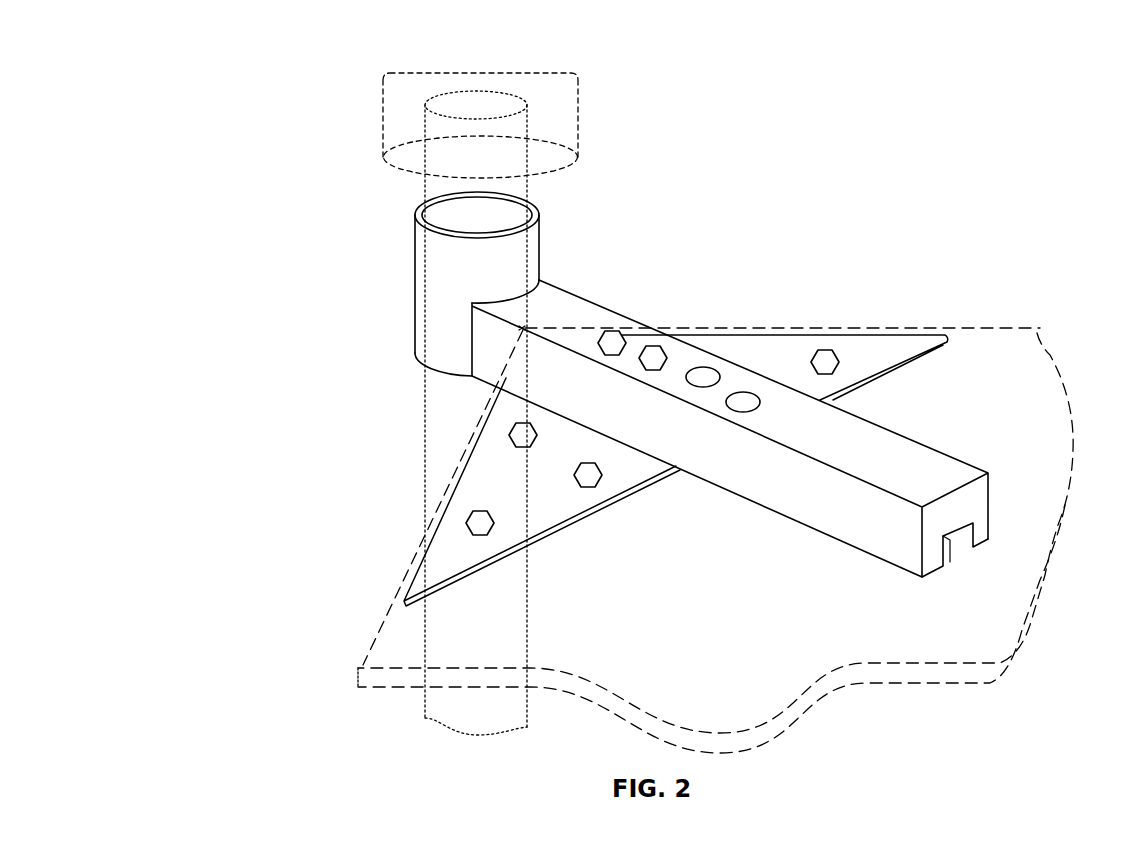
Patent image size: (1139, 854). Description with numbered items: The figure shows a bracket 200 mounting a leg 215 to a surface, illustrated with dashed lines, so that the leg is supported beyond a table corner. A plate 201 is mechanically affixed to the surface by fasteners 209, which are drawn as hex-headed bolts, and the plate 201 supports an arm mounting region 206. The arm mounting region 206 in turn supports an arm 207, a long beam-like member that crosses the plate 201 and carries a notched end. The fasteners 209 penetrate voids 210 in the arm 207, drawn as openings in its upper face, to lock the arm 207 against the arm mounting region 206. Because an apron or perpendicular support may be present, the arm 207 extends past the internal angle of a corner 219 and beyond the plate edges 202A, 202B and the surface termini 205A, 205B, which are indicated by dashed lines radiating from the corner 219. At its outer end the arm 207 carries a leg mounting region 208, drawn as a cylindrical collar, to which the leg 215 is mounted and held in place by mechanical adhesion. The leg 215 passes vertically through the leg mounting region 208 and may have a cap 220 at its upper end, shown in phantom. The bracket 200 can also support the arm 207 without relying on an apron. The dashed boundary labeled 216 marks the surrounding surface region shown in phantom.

The bracket 200 is at (210, 64).
The cap 220 is at (572, 121).
The leg 215 is at (435, 417).
The leg mounting region 208 is at (495, 274).
The arm 207 is at (871, 458).
The arm mounting region 206 is at (957, 550).
The plate edge 202B is at (853, 335).
The surface terminus 205B is at (923, 327).
The plate edge 202A is at (428, 530).
The surface terminus 205A is at (413, 557).
The corner 219 is at (522, 328).
The fasteners 209 is at (653, 358).
The voids 210 is at (743, 402).
The plate 201 is at (580, 459).
The ground/wall boundary 216 is at (770, 664).